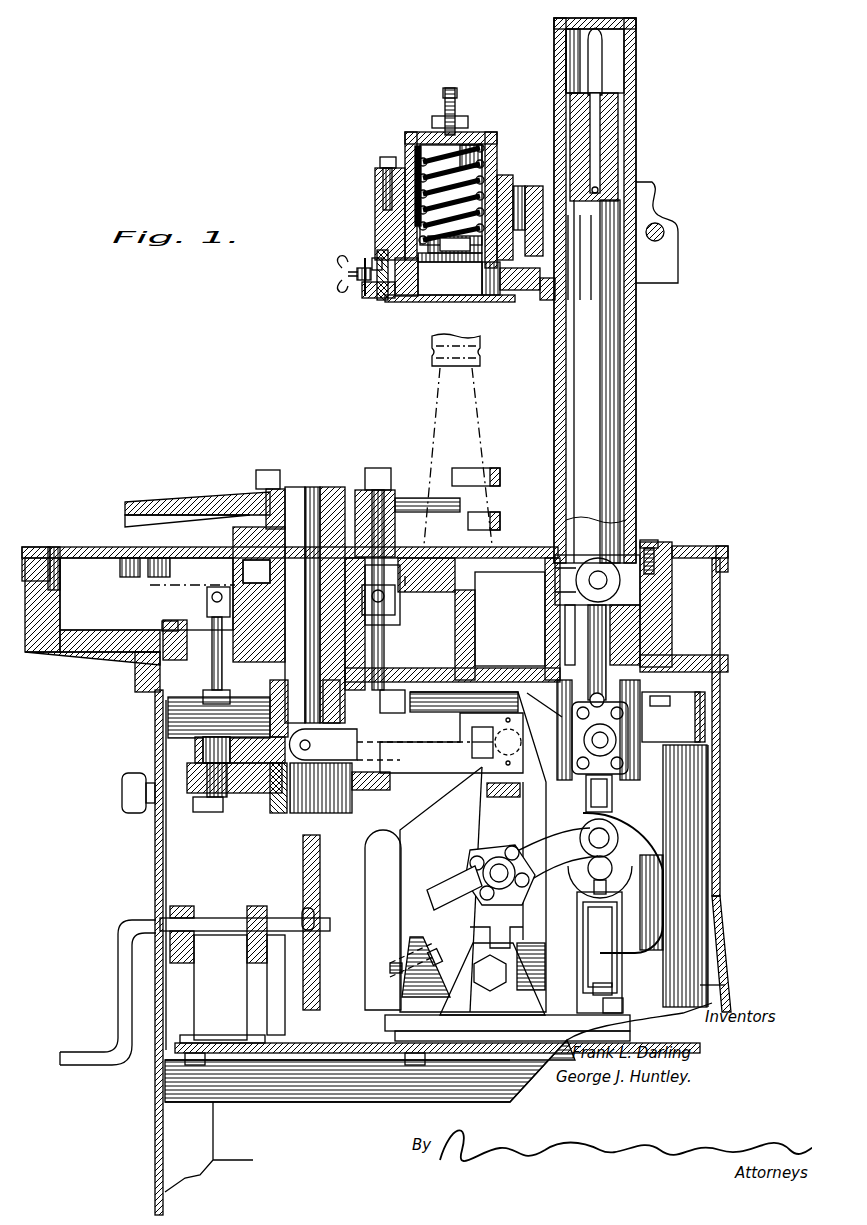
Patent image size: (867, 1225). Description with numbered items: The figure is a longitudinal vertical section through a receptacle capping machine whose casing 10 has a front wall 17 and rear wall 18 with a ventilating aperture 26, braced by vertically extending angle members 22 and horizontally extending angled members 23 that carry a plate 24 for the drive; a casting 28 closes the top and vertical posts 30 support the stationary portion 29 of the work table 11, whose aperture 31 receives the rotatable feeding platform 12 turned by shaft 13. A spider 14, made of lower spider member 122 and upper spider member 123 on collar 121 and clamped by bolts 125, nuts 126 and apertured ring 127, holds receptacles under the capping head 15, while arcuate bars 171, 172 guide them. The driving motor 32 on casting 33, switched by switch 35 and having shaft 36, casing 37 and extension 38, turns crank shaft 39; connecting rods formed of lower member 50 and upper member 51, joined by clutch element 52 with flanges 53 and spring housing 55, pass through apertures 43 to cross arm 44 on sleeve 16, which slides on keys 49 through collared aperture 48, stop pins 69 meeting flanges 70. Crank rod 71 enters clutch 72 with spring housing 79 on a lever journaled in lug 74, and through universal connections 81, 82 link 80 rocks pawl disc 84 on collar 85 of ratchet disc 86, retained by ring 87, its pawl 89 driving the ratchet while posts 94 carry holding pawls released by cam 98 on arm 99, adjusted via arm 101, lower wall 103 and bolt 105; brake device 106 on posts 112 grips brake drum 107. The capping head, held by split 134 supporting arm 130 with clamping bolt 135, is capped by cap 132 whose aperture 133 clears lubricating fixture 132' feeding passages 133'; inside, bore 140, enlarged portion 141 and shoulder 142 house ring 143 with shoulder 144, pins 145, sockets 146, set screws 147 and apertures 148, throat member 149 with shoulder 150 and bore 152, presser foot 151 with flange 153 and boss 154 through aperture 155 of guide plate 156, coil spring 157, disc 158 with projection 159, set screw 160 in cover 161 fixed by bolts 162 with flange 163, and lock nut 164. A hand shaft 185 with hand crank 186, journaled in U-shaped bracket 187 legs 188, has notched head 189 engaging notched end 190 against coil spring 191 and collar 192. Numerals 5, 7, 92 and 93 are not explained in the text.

The pin 5 is at (597, 693).
The axis line 7 is at (286, 586).
The casing 10 is at (715, 787).
The work table 11 is at (706, 546).
The receptacle feeding platform 12 is at (505, 548).
The shaft 13 is at (298, 496).
The spider 14 is at (206, 502).
The capping head 15 is at (375, 226).
The vertically reciprocating sleeve 16 is at (630, 380).
The front wall 17 is at (155, 885).
The rear wall 18 is at (716, 864).
The vertically extending angle members 22 is at (700, 814).
The horizontally extending angled members 23 is at (278, 1102).
The plate 24 is at (330, 1039).
The ventilating aperture 26 is at (724, 962).
The casting 28 is at (702, 658).
The stationary portion of the work table 29 is at (32, 546).
The vertical posts 30 is at (122, 664).
The aperture 31 is at (62, 546).
The driving motor 32 is at (612, 470).
The casting 33 is at (470, 1032).
The switch 35 is at (122, 791).
The motor shaft 36 is at (321, 902).
The motor casing 37 is at (450, 842).
The extension 38 is at (650, 864).
The crank shaft 39 is at (612, 870).
The apertures 43 is at (640, 652).
The cross arm 44 is at (578, 566).
The collared aperture 48 is at (643, 546).
The keys 49 is at (624, 178).
The lower member 50 is at (610, 826).
The upper member 51 is at (560, 621).
The clutch element 52 is at (640, 721).
The flanges 53 is at (588, 796).
The spring housing 55 is at (586, 752).
The stop pins 69 is at (548, 699).
The downwardly projecting flanges 70 is at (556, 672).
The crank rod 71 is at (553, 858).
The clutch 72 is at (470, 896).
The lug 74 is at (516, 976).
The spring housing 79 is at (476, 870).
The link 80 is at (432, 756).
The universal connection 81 is at (480, 748).
The universal connection 82 is at (265, 786).
The pawl disc 84 is at (248, 792).
The collar 85 is at (280, 814).
The ratchet disc 86 is at (200, 751).
The ring 87 is at (276, 822).
The pawl 89 is at (200, 777).
The guide 92 is at (420, 972).
The wedge 93 is at (405, 1000).
The posts 94 is at (449, 704).
The cam 98 is at (402, 753).
The arm 99 is at (385, 838).
The arm 101 is at (360, 816).
The lower wall 103 is at (338, 744).
The bolt 105 is at (378, 795).
The brake device 106 is at (208, 601).
The brake drum 107 is at (226, 570).
The posts 112 is at (396, 616).
The collar 121 is at (335, 487).
The lower spider member 122 is at (150, 519).
The upper spider member 123 is at (178, 485).
The bolts 125 is at (276, 472).
The nuts 126 is at (395, 459).
The apertured ring 127 is at (405, 541).
The supporting arm 130 is at (548, 296).
The cap 132 is at (623, 61).
The lubricating fixture 132' is at (634, 51).
The central aperture 133 is at (545, 61).
The lubricating passages 133' is at (624, 147).
The split 134 is at (648, 206).
The clamping bolt 135 is at (661, 230).
The bore 140 is at (502, 176).
The enlarged lower portion 141 is at (490, 302).
The shoulder 142 is at (591, 262).
The ring 143 is at (512, 300).
The shoulder 144 is at (400, 312).
The pins 145 is at (378, 300).
The sockets 146 is at (372, 260).
The set screws 147 is at (348, 280).
The apertures 148 is at (364, 290).
The throat member 149 is at (420, 302).
The annular shoulder 150 is at (450, 274).
The presser foot 151 is at (460, 344).
The bore 152 is at (410, 302).
The flange 153 is at (568, 232).
The boss 154 is at (500, 238).
The aperture 155 is at (455, 244).
The guide plate 156 is at (580, 247).
The coil spring 157 is at (405, 153).
The disc 158 is at (494, 142).
The downwardly projecting portion 159 is at (467, 135).
The set screw 160 is at (452, 90).
The cover 161 is at (418, 140).
The bolts 162 is at (378, 188).
The annular flange 163 is at (530, 200).
The lock nut 164 is at (438, 118).
The arcuate bar 171 is at (498, 473).
The arcuate bar 172 is at (498, 519).
The shaft 185 is at (232, 919).
The hand crank 186 is at (117, 1004).
The U-shaped bracket 187 is at (262, 1016).
The legs 188 is at (270, 1012).
The notched head 189 is at (280, 952).
The notched end 190 is at (305, 913).
The coil spring 191 is at (228, 952).
The collar 192 is at (185, 908).